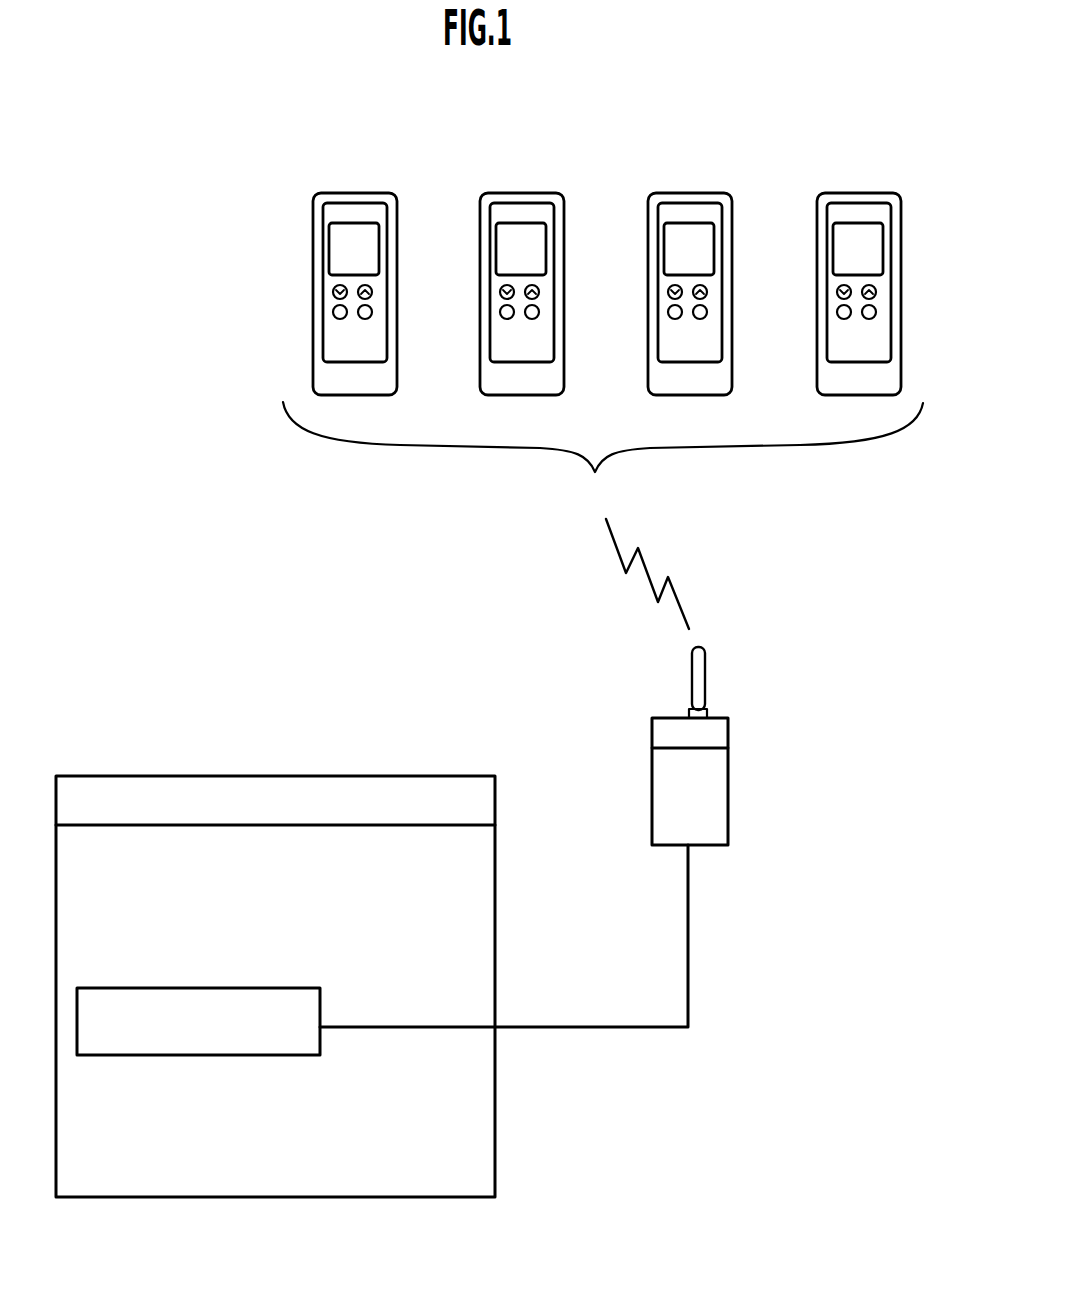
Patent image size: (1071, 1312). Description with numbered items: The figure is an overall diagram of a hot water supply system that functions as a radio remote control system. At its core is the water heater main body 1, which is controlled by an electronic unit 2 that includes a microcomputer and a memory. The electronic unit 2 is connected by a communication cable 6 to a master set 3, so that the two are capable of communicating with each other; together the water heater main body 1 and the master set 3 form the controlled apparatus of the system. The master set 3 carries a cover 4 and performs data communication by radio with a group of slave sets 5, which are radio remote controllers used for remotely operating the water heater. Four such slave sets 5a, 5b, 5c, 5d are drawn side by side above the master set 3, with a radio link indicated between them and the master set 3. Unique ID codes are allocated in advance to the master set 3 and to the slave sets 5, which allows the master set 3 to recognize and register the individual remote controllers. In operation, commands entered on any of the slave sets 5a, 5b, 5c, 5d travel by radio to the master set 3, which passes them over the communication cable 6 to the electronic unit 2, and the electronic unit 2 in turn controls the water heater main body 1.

The water heater main body 1 is at (387, 775).
The electronic unit 2 is at (262, 988).
The master set 3 is at (728, 822).
The cover 4 is at (717, 772).
The slave sets 5 is at (603, 314).
The slave set 5a is at (357, 193).
The slave set 5b is at (520, 193).
The slave set 5c is at (692, 193).
The slave set 5d is at (865, 193).
The communication cable 6 is at (688, 950).